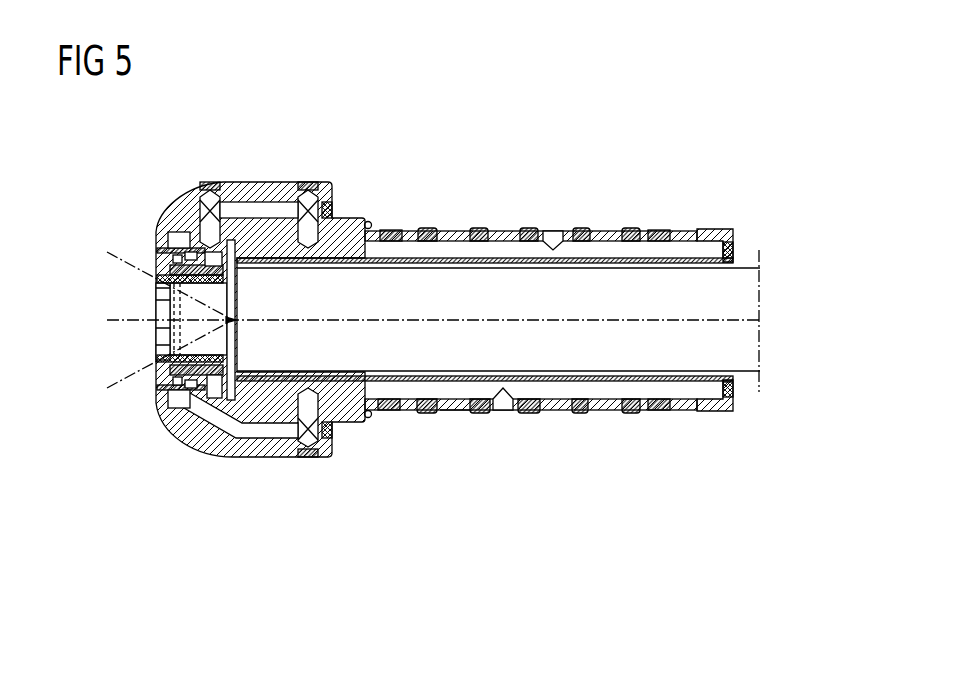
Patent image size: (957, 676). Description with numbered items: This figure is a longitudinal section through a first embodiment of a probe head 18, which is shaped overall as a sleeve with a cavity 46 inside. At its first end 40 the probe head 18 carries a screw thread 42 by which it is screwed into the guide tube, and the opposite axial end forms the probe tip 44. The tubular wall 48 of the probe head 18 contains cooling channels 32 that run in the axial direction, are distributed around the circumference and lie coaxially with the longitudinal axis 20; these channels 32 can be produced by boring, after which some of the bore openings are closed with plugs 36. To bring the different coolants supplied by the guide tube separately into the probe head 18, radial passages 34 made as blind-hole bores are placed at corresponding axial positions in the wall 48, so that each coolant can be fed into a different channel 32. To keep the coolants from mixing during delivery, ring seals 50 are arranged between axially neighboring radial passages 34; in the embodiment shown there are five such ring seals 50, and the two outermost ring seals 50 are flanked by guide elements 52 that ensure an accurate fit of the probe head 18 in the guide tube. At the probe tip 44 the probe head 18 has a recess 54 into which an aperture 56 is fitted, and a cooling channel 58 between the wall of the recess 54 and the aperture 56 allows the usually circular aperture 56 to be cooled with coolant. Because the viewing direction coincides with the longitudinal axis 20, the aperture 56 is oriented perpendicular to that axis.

The probe head 18 is at (512, 104).
The longitudinal axis 20 is at (493, 320).
The cooling channels 32 is at (681, 264).
The radial passages 34 is at (553, 236).
The plugs 36 is at (736, 249).
The first end 40 is at (720, 424).
The screw thread 42 is at (711, 229).
The probe tip 44 is at (186, 466).
The cavity 46 is at (748, 298).
The tubular wall 48 is at (455, 411).
The ring seals 50 is at (479, 230).
The guide elements 52 is at (389, 229).
The recess 54 is at (158, 367).
The aperture 56 is at (160, 298).
The cooling channel 58 is at (166, 402).